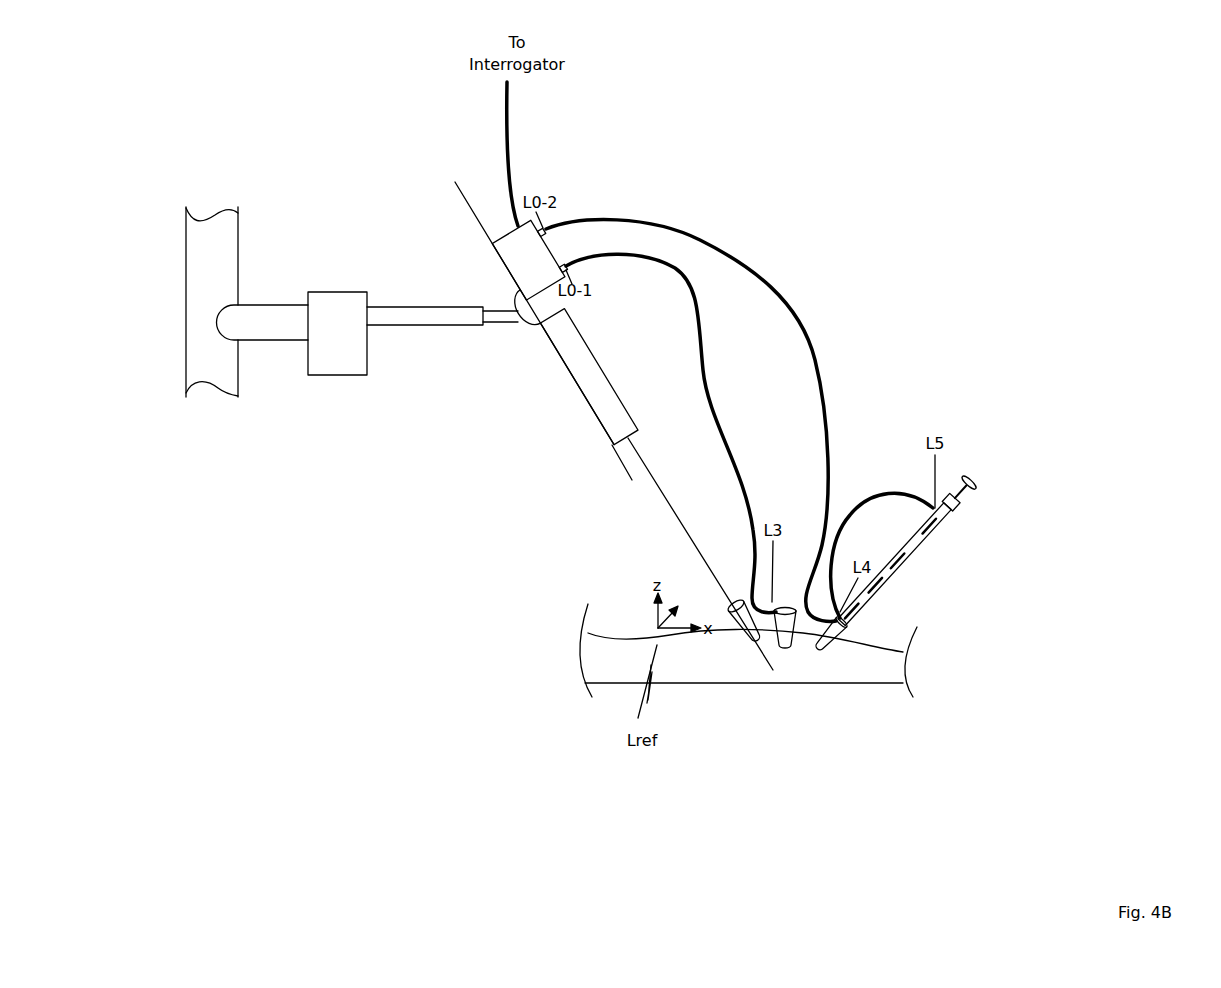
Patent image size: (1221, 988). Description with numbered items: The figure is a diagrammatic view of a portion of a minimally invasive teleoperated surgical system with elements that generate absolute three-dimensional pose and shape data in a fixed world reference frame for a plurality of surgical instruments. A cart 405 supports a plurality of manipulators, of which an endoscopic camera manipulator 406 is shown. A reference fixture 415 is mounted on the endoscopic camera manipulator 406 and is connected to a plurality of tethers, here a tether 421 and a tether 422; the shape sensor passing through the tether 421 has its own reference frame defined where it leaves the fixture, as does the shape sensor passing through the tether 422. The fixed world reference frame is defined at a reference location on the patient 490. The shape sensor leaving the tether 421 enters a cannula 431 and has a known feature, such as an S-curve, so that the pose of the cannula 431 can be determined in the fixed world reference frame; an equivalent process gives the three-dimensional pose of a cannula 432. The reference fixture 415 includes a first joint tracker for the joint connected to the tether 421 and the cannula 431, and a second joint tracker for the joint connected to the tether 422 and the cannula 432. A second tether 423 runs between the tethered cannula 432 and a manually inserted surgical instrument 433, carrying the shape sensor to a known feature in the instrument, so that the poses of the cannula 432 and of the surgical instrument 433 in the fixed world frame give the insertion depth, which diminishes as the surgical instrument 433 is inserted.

The cart 405 is at (178, 297).
The endoscopic camera manipulator 406 is at (413, 353).
The reference fixture 415 is at (510, 236).
The tether 421 is at (703, 370).
The tether 422 is at (805, 333).
The second tether 423 is at (880, 490).
The cannula 431 is at (793, 600).
The cannula 432 is at (858, 628).
The surgical instrument 433 is at (920, 548).
The patient 490 is at (747, 675).